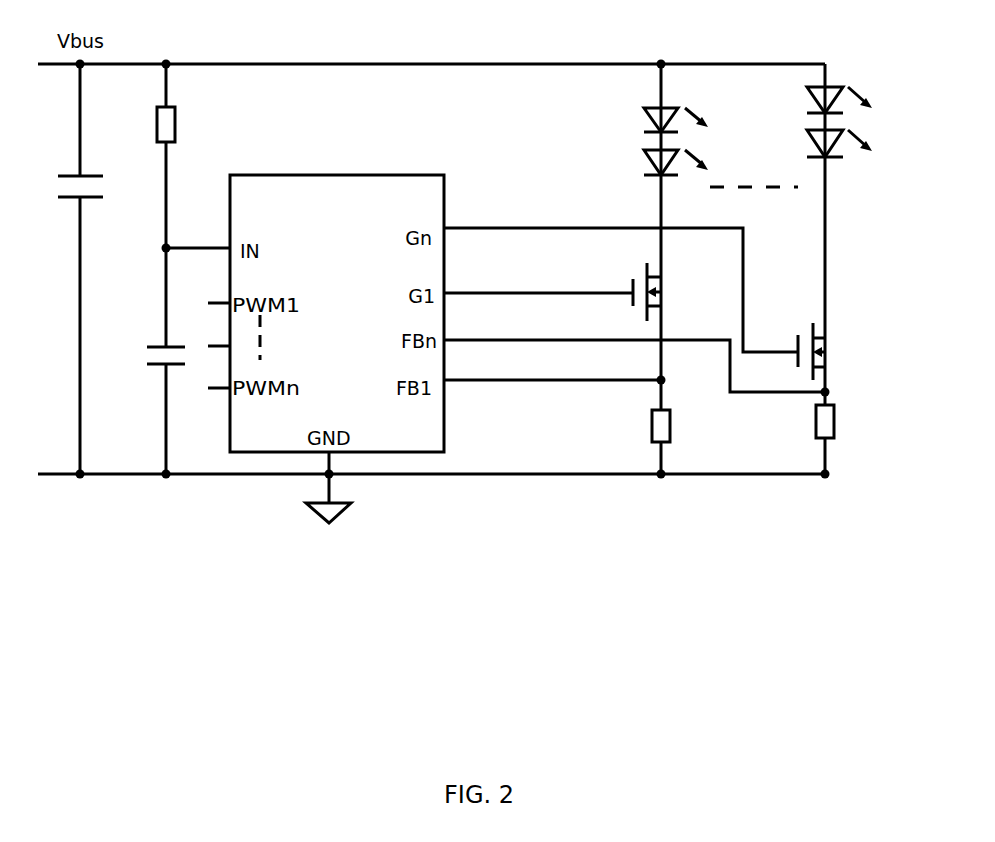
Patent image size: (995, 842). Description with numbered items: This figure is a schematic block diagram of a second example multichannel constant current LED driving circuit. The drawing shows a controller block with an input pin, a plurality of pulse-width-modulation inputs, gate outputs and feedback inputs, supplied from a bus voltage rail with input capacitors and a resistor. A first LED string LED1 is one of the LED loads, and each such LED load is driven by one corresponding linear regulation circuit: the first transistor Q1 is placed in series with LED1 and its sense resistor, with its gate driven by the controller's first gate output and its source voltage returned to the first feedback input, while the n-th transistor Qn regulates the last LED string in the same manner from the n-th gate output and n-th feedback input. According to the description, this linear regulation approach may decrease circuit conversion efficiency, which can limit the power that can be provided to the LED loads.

The first transistor Q1 is at (634, 367).
The n-th transistor Qn is at (799, 397).
The first LED string LED1 is at (699, 170).